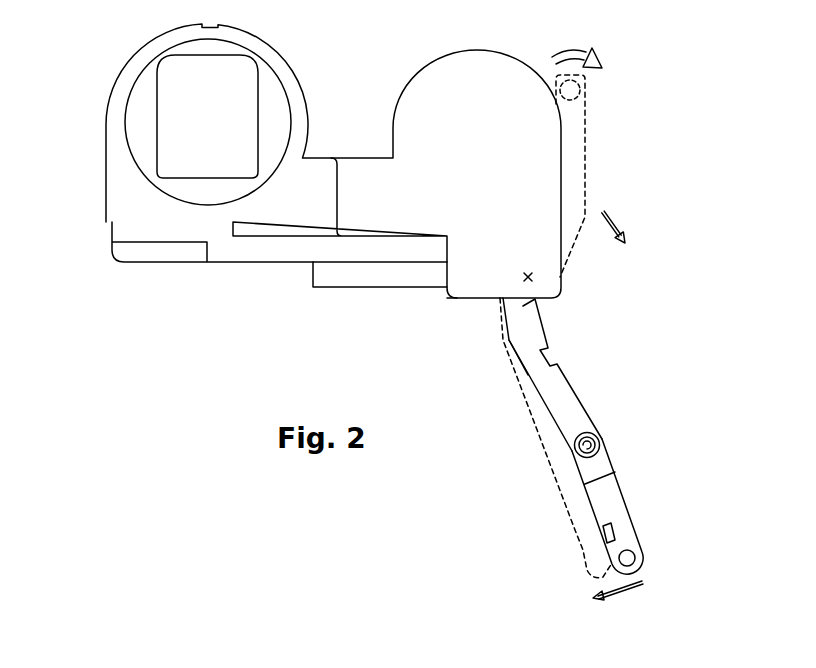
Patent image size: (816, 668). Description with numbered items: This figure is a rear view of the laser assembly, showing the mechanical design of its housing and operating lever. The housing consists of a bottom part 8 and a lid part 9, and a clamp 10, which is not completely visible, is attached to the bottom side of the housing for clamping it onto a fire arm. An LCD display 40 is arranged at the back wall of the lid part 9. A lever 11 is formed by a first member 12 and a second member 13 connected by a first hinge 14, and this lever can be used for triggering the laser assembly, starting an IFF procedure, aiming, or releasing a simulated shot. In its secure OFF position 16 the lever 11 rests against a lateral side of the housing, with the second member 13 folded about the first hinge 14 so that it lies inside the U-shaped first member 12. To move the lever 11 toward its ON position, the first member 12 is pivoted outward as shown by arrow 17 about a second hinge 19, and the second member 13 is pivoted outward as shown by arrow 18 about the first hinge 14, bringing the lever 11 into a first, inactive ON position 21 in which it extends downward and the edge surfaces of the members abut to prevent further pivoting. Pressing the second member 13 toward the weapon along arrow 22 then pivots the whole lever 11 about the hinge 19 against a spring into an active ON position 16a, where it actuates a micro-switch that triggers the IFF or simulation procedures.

The bottom part 8 is at (122, 230).
The lid part 9 is at (118, 182).
The clamp 10 is at (305, 264).
The lever 11 is at (505, 416).
The first member 12 is at (562, 388).
The second member 13 is at (612, 498).
The first hinge 14 is at (590, 444).
The secure OFF position 16 is at (595, 110).
The active ON position 16a is at (573, 543).
The arrow 17 is at (617, 222).
The arrow 18 is at (577, 43).
The second hinge 19 is at (534, 277).
The first inactive ON position 21 is at (648, 545).
The arrow 22 is at (633, 590).
The LCD display 40 is at (242, 108).